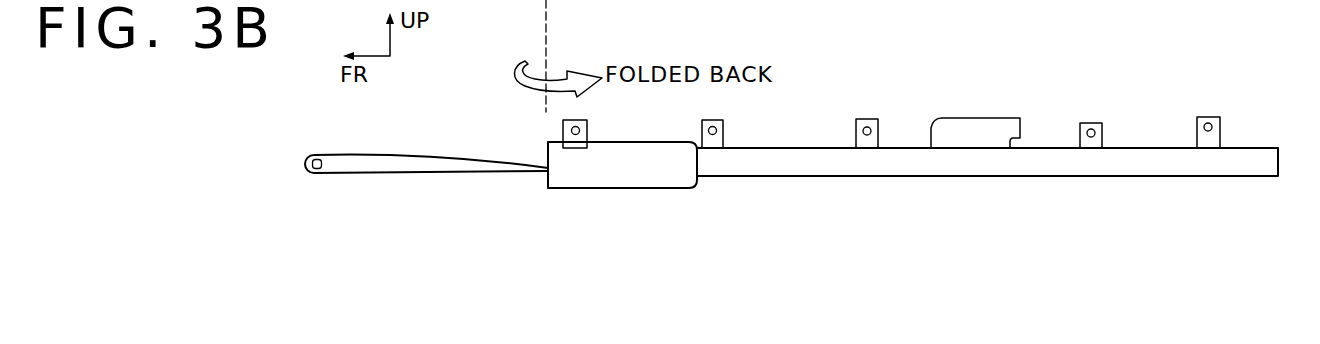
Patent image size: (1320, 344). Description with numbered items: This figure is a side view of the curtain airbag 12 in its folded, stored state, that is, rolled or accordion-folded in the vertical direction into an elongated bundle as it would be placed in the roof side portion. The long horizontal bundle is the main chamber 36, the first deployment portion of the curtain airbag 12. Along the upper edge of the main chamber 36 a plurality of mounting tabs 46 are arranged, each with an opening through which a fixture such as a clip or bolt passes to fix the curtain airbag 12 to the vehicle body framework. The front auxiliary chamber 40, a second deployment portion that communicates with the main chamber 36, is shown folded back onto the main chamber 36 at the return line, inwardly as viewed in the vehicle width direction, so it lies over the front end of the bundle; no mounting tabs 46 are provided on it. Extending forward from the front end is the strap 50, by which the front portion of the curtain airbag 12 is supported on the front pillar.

The curtain airbag 12 is at (1078, 97).
The main chamber 36 is at (857, 167).
The front auxiliary chamber 40 is at (662, 173).
The mounting tabs 46 is at (588, 128).
The strap 50 is at (450, 167).